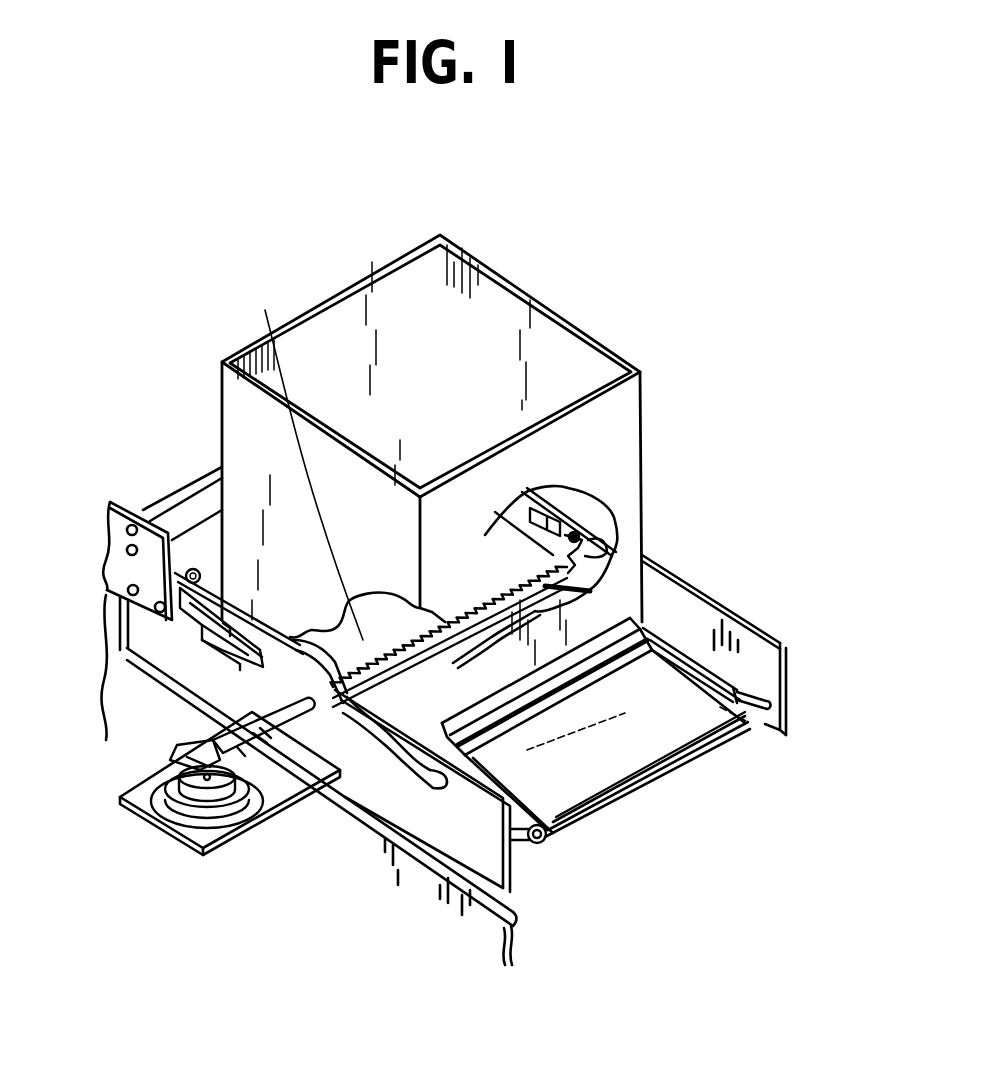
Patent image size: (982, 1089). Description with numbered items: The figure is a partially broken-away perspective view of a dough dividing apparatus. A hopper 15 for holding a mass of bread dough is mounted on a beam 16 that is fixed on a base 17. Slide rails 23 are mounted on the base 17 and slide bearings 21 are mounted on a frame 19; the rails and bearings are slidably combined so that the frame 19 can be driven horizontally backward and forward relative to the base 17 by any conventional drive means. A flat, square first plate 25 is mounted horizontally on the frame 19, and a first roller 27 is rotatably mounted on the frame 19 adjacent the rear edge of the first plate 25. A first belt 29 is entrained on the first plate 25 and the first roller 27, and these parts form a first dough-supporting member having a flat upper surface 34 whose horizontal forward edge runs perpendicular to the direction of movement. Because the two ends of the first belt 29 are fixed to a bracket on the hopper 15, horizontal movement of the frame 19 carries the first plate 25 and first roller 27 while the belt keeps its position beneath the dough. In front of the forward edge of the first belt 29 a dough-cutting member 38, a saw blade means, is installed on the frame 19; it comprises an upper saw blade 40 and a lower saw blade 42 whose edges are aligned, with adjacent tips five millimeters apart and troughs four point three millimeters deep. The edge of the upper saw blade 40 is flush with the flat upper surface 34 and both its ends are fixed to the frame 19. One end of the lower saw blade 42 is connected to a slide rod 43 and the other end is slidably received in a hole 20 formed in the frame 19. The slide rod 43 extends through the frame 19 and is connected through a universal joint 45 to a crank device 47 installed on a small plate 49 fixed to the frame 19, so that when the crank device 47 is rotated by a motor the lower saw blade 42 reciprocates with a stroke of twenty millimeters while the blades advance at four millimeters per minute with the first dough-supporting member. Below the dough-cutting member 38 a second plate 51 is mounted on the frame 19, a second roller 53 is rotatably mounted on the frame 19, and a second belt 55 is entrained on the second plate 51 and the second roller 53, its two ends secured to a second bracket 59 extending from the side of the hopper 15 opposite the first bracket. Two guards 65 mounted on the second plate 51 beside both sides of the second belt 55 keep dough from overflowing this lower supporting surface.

The hopper 15 is at (490, 270).
The beam 16 is at (163, 502).
The base 17 is at (124, 495).
The frame 19 is at (437, 823).
The hole 20 is at (598, 542).
The slide bearings 21 is at (215, 648).
The slide rails 23 is at (190, 640).
The first plate 25 is at (570, 518).
The first roller 27 is at (188, 568).
The first belt 29 is at (612, 515).
The flat upper surface 34 is at (301, 459).
The dough-cutting member 38 is at (442, 605).
The upper saw blade 40 is at (455, 620).
The lower saw blade 42 is at (335, 692).
The slide rod 43 is at (291, 733).
The universal joint 45 is at (257, 768).
The crank device 47 is at (200, 787).
The small plate 49 is at (145, 803).
The second plate 51 is at (645, 640).
The second roller 53 is at (546, 845).
The second belt 55 is at (630, 792).
The second bracket 59 is at (603, 642).
The guards 65 is at (663, 645).